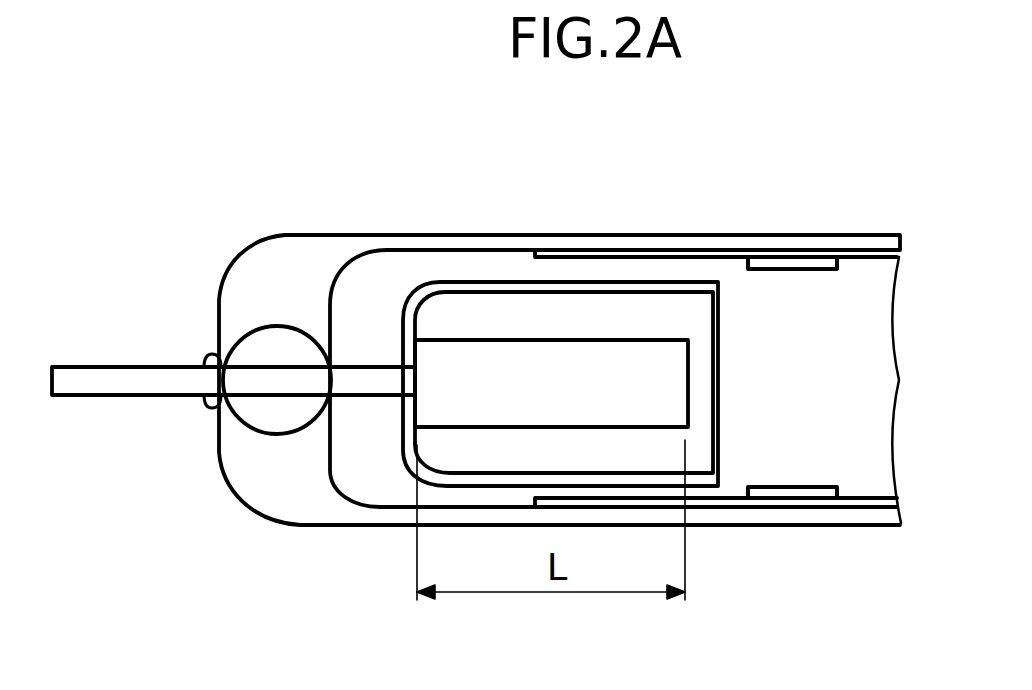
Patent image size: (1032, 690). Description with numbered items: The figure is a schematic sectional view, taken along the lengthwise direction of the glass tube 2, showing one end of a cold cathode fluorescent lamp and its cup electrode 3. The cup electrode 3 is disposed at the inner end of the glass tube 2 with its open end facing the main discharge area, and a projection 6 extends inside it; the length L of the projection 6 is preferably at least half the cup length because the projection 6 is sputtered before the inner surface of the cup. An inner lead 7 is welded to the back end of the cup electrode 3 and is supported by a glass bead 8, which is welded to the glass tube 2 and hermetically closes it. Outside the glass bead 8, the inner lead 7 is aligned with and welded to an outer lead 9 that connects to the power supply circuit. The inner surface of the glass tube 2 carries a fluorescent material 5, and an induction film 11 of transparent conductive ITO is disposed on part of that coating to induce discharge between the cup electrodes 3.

The glass tube 2 is at (718, 236).
The cup electrode 3 is at (582, 282).
The fluorescent material 5 is at (815, 257).
The projection 6 is at (490, 380).
The inner lead 7 is at (368, 382).
The glass bead 8 is at (280, 327).
The outer lead 9 is at (90, 367).
The induction film 11 is at (807, 493).